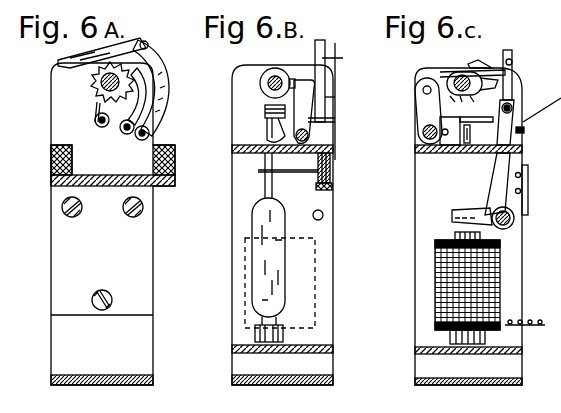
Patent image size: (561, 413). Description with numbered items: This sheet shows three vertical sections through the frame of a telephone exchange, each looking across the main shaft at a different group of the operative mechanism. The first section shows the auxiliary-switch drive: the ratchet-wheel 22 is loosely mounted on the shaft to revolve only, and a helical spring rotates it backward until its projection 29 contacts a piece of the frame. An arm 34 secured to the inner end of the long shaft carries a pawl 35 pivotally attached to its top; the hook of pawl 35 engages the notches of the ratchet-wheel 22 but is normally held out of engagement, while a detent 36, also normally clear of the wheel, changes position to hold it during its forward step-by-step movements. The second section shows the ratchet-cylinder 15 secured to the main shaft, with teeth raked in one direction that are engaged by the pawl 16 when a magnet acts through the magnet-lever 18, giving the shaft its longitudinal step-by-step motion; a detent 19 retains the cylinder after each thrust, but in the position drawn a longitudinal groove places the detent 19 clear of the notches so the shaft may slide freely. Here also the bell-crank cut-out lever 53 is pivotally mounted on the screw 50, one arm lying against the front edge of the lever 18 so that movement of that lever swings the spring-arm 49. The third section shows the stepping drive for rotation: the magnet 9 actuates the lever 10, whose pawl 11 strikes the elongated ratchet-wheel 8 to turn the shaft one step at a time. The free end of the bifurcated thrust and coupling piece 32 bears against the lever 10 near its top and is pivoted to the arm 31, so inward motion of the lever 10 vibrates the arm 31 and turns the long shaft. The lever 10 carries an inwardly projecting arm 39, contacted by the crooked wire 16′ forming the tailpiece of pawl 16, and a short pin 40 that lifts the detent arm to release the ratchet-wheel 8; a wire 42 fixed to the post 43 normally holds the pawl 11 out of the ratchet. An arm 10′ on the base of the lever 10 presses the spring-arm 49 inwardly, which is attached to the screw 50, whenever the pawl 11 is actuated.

In FIG. 6A, the ratchet-wheel 22 is at (95, 86).
In FIG. 6A, the pawl 35 is at (80, 50).
In FIG. 6A, the arm 34 is at (166, 88).
In FIG. 6A, the detent 36 is at (140, 103).
In FIG. 6A, the projection 29 is at (106, 111).
In FIG. 6B, the ratchet-cylinder 15 is at (272, 77).
In FIG. 6B, the detent 19 is at (306, 122).
In FIG. 6B, the pawl 16 is at (272, 112).
In FIG. 6B, the post 43 is at (311, 53).
In FIG. 6C, the post 43 is at (497, 60).
In FIG. 6B, the bell-crank cut-out lever 53 is at (330, 165).
In FIG. 6B, the magnet-lever 18 is at (270, 192).
In FIG. 6B, the screw 50 is at (397, 212).
In FIG. 6C, the arm 31 is at (425, 97).
In FIG. 6C, the thrust and coupling piece 32 is at (440, 72).
In FIG. 6C, the ratchet-wheel 8 is at (470, 64).
In FIG. 6C, the arm 39 is at (486, 140).
In FIG. 6C, the wire 42 is at (512, 62).
In FIG. 6C, the pawl 11 is at (512, 101).
In FIG. 6C, the pin 40 is at (525, 130).
In FIG. 6C, the crooked wire 16′ is at (462, 158).
In FIG. 6C, the lever 10 is at (505, 166).
In FIG. 6C, the spring-arm 49 is at (521, 191).
In FIG. 6C, the arm 10′ is at (520, 213).
In FIG. 6C, the magnet 9 is at (490, 278).